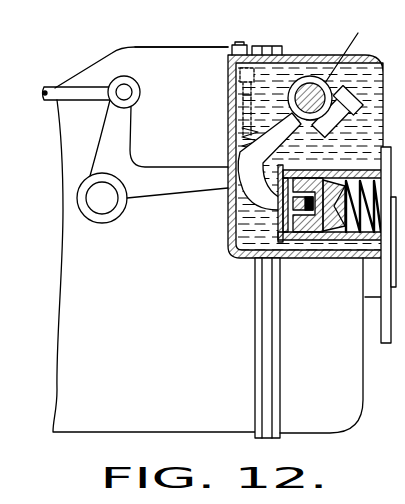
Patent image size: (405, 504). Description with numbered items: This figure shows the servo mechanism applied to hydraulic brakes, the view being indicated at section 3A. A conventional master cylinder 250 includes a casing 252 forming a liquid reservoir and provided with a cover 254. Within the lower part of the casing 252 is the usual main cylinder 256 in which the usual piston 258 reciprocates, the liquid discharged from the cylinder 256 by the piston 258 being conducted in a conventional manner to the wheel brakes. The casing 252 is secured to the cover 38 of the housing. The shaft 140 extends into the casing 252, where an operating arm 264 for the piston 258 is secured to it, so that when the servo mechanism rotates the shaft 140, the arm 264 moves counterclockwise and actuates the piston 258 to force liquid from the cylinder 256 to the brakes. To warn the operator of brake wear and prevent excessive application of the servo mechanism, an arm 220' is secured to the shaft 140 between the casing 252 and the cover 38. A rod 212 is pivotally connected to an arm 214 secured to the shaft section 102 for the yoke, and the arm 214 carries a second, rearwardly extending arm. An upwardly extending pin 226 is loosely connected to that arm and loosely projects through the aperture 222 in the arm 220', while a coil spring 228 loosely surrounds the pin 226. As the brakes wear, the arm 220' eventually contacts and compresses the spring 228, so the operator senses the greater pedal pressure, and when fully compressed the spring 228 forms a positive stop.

The section line / assembly 3A is at (141, 48).
The rod 212 is at (77, 87).
The arm 214 is at (110, 125).
The pin 226 is at (222, 74).
The arm 220' is at (209, 94).
The operating arm 264 is at (240, 127).
The coil spring 228 is at (240, 143).
The aperture 222 is at (146, 187).
The shaft section 102 is at (100, 209).
The casing 252 is at (228, 226).
The master cylinder 250 is at (229, 265).
The cover 254 is at (302, 55).
The shaft 140 is at (350, 40).
The main cylinder 256 is at (328, 240).
The piston 258 is at (300, 240).
The cover 38 is at (340, 409).